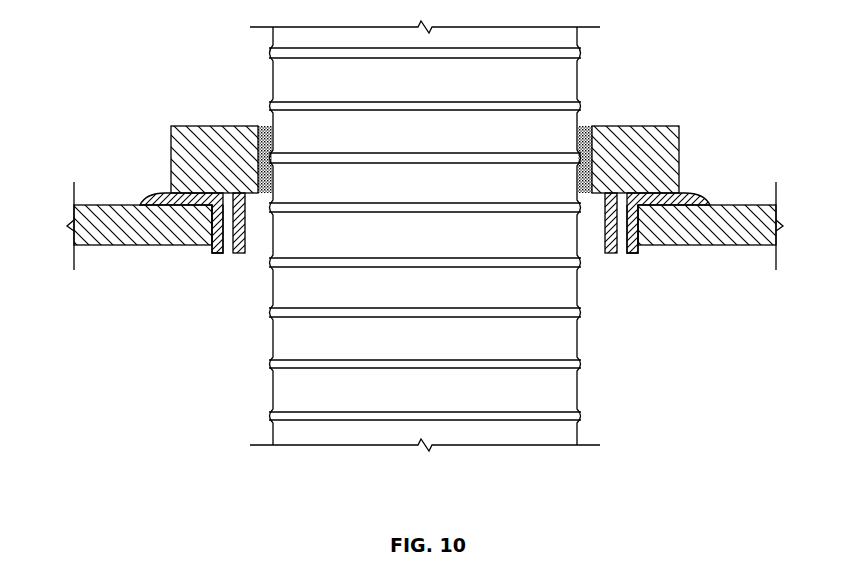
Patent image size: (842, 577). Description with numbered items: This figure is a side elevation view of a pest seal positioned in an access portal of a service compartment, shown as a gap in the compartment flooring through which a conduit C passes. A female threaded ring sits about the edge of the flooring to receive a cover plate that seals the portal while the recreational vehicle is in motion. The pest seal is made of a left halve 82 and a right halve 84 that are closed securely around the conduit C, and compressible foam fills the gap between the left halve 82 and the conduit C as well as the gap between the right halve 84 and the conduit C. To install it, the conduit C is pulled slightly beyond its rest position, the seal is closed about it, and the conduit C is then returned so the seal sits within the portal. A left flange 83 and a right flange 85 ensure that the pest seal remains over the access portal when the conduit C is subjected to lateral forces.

The conduit C is at (430, 198).
The left halve 82 is at (178, 121).
The left flange 83 is at (238, 256).
The right halve 84 is at (661, 122).
The right flange 85 is at (611, 256).